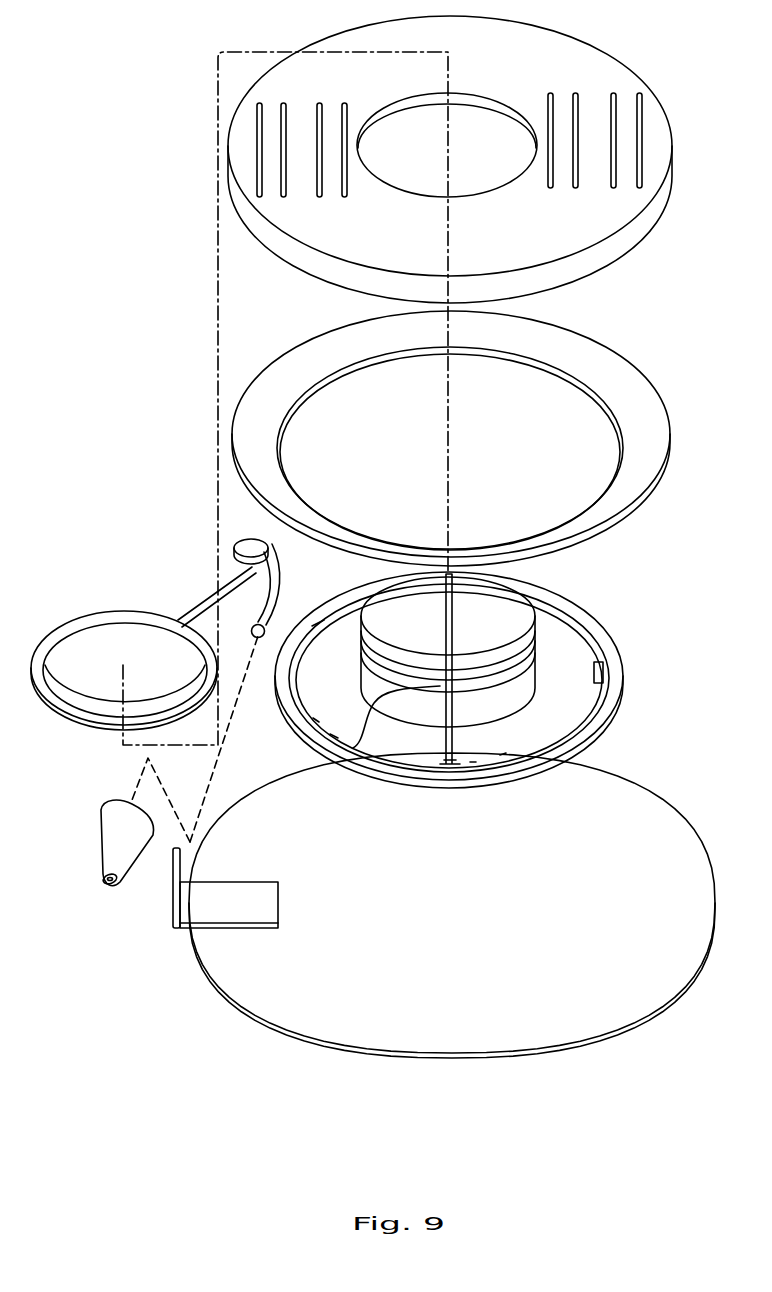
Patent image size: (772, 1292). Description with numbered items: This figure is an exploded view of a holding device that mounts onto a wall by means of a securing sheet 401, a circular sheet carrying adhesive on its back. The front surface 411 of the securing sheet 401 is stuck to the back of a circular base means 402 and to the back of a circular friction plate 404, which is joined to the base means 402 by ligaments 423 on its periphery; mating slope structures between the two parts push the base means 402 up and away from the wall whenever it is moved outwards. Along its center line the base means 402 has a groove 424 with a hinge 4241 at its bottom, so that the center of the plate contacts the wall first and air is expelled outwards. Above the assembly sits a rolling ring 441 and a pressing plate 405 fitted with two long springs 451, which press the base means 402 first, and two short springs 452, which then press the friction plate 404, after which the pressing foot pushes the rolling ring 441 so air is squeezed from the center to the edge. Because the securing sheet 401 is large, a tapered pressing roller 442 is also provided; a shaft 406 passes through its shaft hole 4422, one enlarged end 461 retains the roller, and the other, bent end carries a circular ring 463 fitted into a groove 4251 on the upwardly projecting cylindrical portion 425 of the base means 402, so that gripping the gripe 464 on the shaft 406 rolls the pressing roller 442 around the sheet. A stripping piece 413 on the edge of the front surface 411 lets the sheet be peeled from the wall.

The securing sheet 401 is at (453, 905).
The base means 402 is at (492, 671).
The friction plate 404 is at (613, 656).
The pressing plate 405 is at (513, 63).
The shaft 406 is at (221, 585).
The front surface 411 is at (605, 923).
The stripping piece 413 is at (173, 907).
The ligaments 423 is at (607, 670).
The groove 424 is at (453, 637).
The cylindrical portion 425 is at (418, 645).
The rolling ring 441 is at (627, 477).
The pressing roller 442 is at (96, 847).
The long springs 451 is at (560, 110).
The short springs 452 is at (627, 113).
The end of the shaft 461 is at (252, 636).
The circular ring 463 is at (104, 611).
The gripe 464 is at (250, 545).
The hinge 4241 is at (453, 735).
The groove 4251 is at (327, 755).
The shaft hole 4422 is at (103, 883).